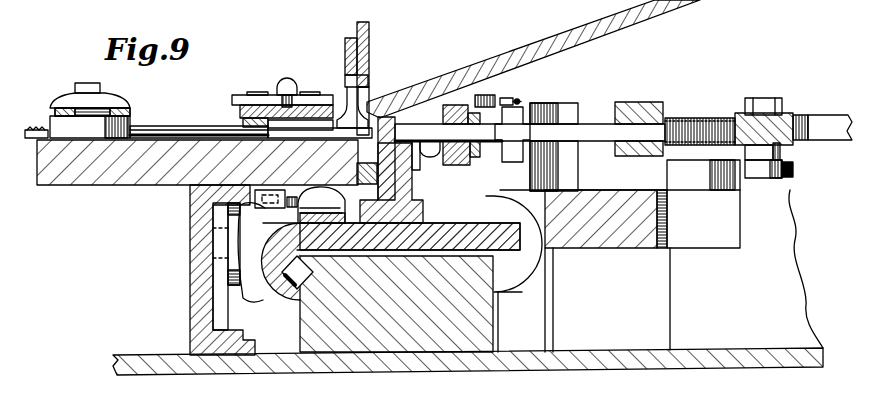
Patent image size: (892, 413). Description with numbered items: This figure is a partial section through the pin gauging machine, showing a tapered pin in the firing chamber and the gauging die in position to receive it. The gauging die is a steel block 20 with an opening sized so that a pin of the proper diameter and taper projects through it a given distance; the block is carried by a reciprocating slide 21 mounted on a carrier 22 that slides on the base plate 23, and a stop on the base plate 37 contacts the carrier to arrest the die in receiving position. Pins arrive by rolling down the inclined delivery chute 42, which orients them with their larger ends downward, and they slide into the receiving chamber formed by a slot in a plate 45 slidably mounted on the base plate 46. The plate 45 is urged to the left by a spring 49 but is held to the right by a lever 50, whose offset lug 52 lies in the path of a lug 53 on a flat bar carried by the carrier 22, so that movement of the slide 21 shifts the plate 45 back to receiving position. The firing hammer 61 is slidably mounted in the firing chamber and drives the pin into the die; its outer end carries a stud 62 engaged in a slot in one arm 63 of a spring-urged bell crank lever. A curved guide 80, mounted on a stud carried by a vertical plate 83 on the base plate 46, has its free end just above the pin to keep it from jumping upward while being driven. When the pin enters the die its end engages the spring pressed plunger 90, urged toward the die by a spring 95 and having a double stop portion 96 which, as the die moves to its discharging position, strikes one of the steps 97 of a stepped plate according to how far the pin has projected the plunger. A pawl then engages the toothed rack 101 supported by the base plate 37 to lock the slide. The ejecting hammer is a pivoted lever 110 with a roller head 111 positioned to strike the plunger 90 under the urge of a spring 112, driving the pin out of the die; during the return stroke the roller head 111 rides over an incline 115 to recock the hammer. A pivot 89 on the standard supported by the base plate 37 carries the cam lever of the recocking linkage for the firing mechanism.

The steel block 20 is at (392, 167).
The reciprocating slide 21 is at (413, 204).
The carrier 22 is at (478, 236).
The base plate 23 is at (473, 328).
The base plate 37 is at (148, 360).
The delivery chute 42 is at (462, 72).
The plate 45 is at (245, 117).
The base plate 46 is at (160, 172).
The spring 49 is at (287, 80).
The lever 50 is at (238, 266).
The offset lug 52 is at (244, 266).
The lug 53 is at (326, 200).
The firing hammer 61 is at (170, 130).
The stud 62 is at (80, 84).
The arm of bell crank lever 63 is at (58, 110).
The curved guide 80 is at (347, 48).
The vertical plate 83 is at (368, 44).
The pivot 89 is at (565, 105).
The spring pressed plunger 90 is at (592, 137).
The spring 95 is at (488, 95).
The double stop portion 96 is at (522, 105).
The steps 97 is at (543, 174).
The toothed rack 101 is at (617, 232).
The pivoted lever 110 is at (826, 128).
The roller head 111 is at (793, 172).
The spring 112 is at (703, 118).
The incline 115 is at (693, 180).